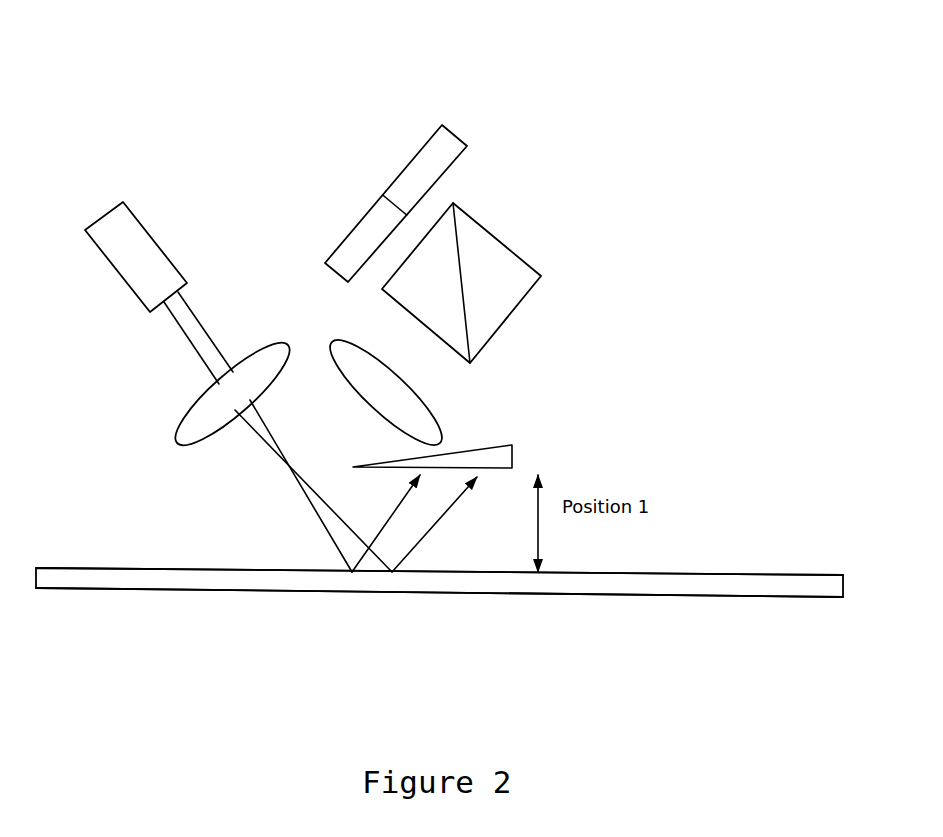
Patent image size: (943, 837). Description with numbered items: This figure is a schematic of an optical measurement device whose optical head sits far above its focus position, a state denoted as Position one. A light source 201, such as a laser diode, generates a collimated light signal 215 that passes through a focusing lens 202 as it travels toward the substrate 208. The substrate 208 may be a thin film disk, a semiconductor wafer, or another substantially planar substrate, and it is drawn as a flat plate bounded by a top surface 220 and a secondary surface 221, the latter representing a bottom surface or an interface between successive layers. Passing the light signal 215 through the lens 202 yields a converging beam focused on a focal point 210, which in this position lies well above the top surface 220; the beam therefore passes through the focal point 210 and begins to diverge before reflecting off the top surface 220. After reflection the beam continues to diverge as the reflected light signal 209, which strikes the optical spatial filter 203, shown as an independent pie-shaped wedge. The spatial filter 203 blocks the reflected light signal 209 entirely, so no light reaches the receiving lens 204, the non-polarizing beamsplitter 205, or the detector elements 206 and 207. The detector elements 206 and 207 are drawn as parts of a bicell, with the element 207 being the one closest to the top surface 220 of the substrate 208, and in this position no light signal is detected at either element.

The light source 201 is at (116, 230).
The focusing lens 202 is at (237, 392).
The optical spatial filter 203 is at (517, 458).
The receiving lens 204 is at (407, 409).
The beamsplitter 205 is at (507, 264).
The detector element 206 is at (441, 150).
The detector element 207 is at (350, 253).
The substrate 208 is at (658, 585).
The reflected light signal 209 is at (425, 502).
The focal point 210 is at (283, 465).
The light signal 215 is at (195, 337).
The top surface 220 is at (597, 568).
The secondary surface 221 is at (390, 597).